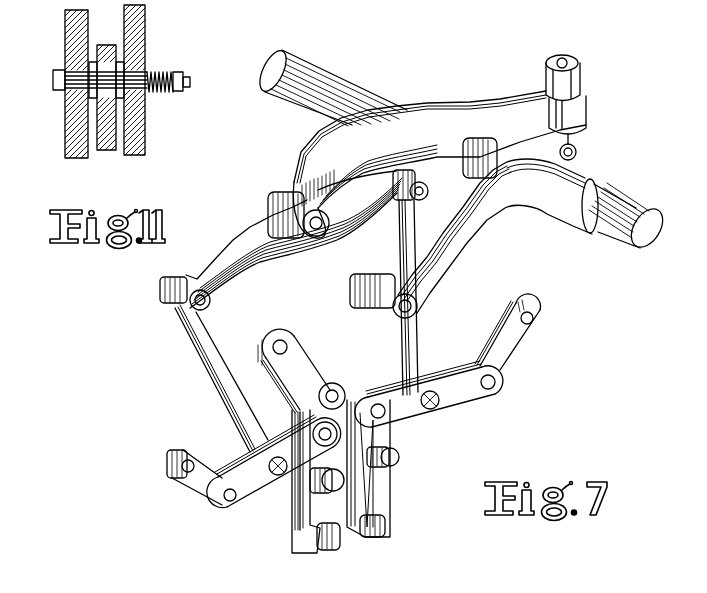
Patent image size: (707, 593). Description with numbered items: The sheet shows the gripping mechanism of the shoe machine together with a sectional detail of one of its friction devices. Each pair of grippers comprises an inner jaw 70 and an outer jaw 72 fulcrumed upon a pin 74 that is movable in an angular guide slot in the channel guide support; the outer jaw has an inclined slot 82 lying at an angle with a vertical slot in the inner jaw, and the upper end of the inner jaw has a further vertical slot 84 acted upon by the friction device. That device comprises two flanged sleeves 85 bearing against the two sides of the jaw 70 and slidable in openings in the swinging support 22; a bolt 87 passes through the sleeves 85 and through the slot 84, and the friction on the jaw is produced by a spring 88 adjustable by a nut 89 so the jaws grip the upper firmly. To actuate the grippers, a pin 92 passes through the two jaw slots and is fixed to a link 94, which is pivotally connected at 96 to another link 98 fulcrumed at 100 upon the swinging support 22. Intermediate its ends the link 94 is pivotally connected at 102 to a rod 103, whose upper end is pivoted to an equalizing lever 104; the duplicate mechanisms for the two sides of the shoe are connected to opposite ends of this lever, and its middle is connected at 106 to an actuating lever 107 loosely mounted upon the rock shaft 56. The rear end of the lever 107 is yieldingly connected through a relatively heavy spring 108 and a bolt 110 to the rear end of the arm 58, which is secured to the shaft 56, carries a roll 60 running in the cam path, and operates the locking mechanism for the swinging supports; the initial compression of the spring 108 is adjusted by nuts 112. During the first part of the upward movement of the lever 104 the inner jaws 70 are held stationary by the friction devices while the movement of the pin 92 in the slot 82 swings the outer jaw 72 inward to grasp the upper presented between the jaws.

In FIG. 11, the swinging support 22 is at (73, 137).
In FIG. 7, the rock shaft 56 is at (325, 83).
In FIG. 7, the arm 58 is at (493, 237).
In FIG. 7, the roll 60 is at (351, 286).
In FIG. 11, the inner jaw 70 is at (104, 150).
In FIG. 7, the inner jaw 70 is at (292, 353).
In FIG. 7, the outer jaw 72 is at (293, 537).
In FIG. 7, the pin 74 is at (397, 455).
In FIG. 7, the inclined slot 82 is at (333, 383).
In FIG. 11, the vertical slot 84 is at (138, 50).
In FIG. 7, the vertical slot 84 is at (274, 354).
In FIG. 11, the flanged sleeve 85 is at (133, 80).
In FIG. 11, the bolt 87 is at (192, 82).
In FIG. 11, the spring 88 is at (172, 93).
In FIG. 11, the nut 89 is at (182, 72).
In FIG. 7, the pin 92 is at (383, 415).
In FIG. 7, the link 94 is at (463, 393).
In FIG. 7, the pivotal connection 96 is at (497, 383).
In FIG. 7, the link 98 is at (512, 347).
In FIG. 7, the fulcrum 100 is at (533, 313).
In FIG. 7, the pivotal connection 102 is at (437, 408).
In FIG. 7, the rod 103 is at (412, 353).
In FIG. 7, the equalizing lever 104 is at (248, 232).
In FIG. 7, the pivotal connection 106 is at (321, 227).
In FIG. 7, the actuating lever 107 is at (395, 132).
In FIG. 7, the spring 108 is at (578, 148).
In FIG. 7, the bolt 110 is at (563, 60).
In FIG. 7, the nut 112 is at (579, 83).